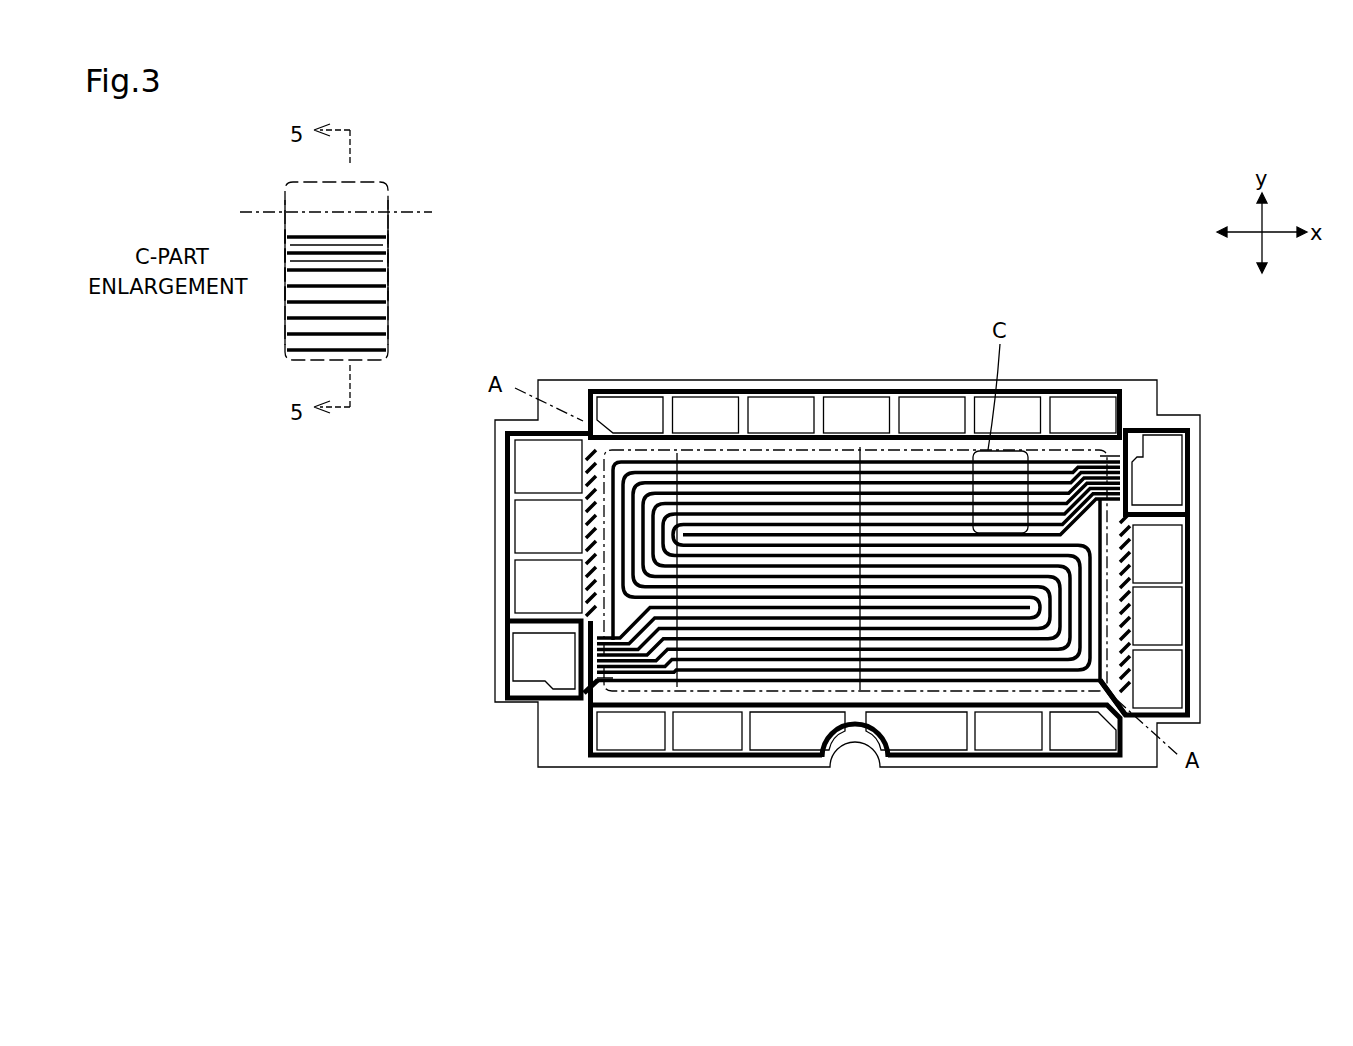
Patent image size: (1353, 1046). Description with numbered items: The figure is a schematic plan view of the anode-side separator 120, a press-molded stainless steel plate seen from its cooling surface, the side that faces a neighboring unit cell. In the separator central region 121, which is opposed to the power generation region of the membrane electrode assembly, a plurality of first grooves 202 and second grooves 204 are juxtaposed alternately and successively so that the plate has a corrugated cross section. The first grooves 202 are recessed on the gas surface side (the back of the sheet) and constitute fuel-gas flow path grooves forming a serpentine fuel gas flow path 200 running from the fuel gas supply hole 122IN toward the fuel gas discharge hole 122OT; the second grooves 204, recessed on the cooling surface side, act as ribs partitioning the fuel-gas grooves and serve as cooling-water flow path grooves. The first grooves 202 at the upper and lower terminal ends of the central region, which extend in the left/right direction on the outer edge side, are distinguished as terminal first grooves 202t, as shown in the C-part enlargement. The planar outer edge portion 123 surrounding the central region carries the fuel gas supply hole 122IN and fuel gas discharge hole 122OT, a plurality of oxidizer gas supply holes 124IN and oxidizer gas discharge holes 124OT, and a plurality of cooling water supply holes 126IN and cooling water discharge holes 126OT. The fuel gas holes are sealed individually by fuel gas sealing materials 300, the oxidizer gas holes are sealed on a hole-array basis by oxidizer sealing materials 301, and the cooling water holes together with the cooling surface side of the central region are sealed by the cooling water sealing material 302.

The anode-side separator 120 is at (618, 194).
The separator central region 121 is at (297, 223).
The outer edge portion 123 is at (392, 190).
The oxidizer gas discharge holes 124OT is at (652, 400).
The oxidizer gas supply holes 124IN is at (622, 745).
The cooling water discharge holes 126OT is at (520, 590).
The cooling water supply holes 126IN is at (1165, 688).
The fuel gas discharge hole 122OT is at (527, 655).
The fuel gas supply hole 122IN is at (1172, 472).
The fuel gas flow path 200 is at (855, 655).
The first grooves 202 is at (390, 273).
The terminal first grooves 202t is at (382, 242).
The second grooves 204 is at (387, 262).
The fuel gas sealing materials 300 is at (1170, 427).
The oxidizer sealing materials 301 is at (680, 400).
The cooling water sealing material 302 is at (1190, 703).